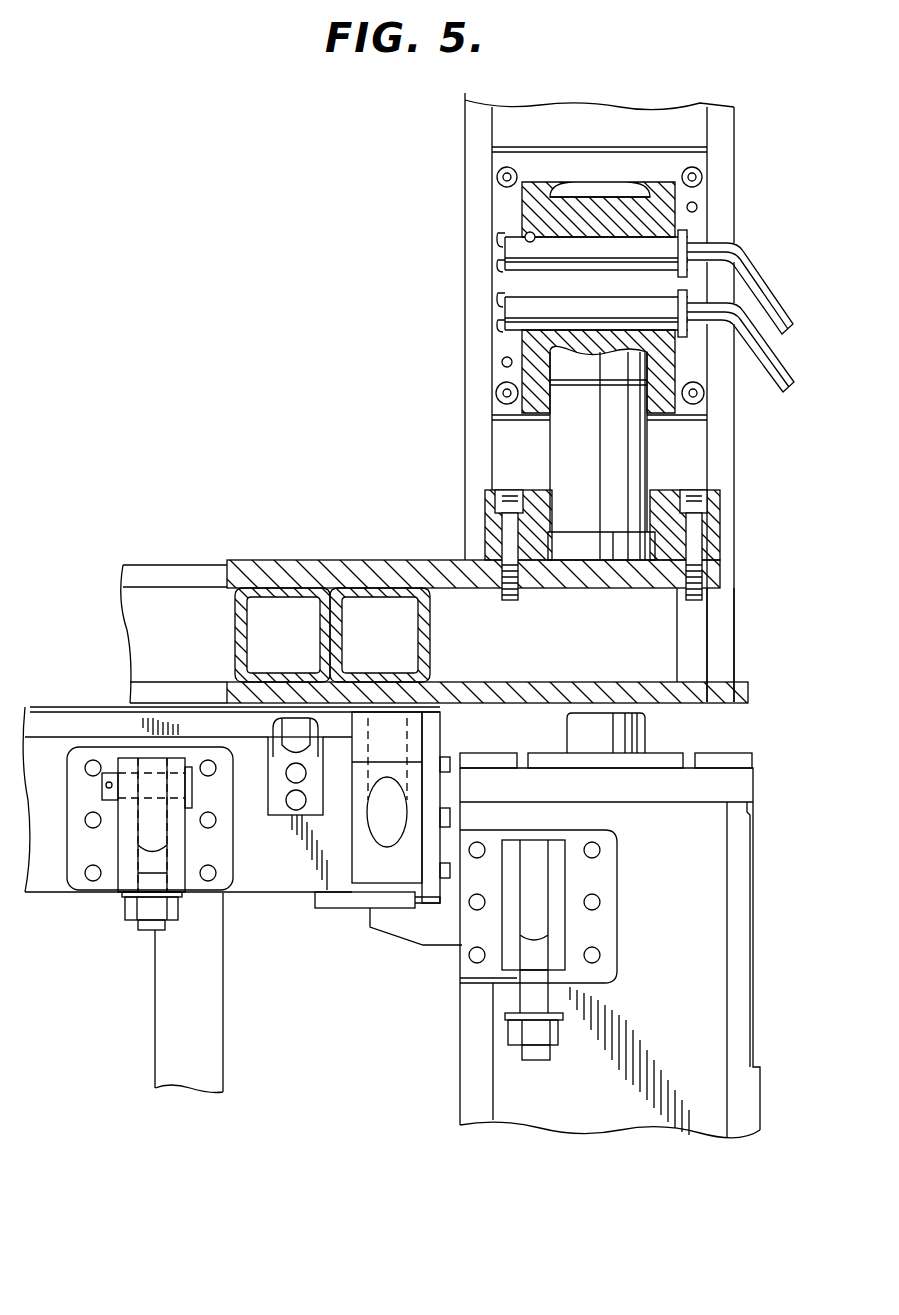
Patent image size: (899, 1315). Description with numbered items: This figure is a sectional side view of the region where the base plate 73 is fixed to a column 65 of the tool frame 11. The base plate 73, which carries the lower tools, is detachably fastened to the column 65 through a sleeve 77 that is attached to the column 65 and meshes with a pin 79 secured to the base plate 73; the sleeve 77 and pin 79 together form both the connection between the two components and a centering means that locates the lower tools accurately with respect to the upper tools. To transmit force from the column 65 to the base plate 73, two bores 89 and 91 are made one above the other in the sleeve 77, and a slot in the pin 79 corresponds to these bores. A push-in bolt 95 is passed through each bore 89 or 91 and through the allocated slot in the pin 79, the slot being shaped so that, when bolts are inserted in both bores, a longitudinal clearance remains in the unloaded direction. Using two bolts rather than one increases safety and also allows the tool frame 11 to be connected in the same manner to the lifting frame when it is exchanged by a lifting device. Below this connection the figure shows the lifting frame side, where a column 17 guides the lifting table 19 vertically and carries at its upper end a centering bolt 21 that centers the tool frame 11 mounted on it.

The tool frame 11 is at (735, 123).
The column 17 is at (686, 905).
The lifting table 19 is at (47, 745).
The centering bolt 21 is at (645, 740).
The column 65 is at (735, 467).
The base plate 73 is at (318, 570).
The sleeve 77 is at (523, 210).
The pin 79 is at (562, 435).
The bore 89 is at (527, 233).
The bore 91 is at (513, 332).
The push-in bolt 95 is at (520, 307).